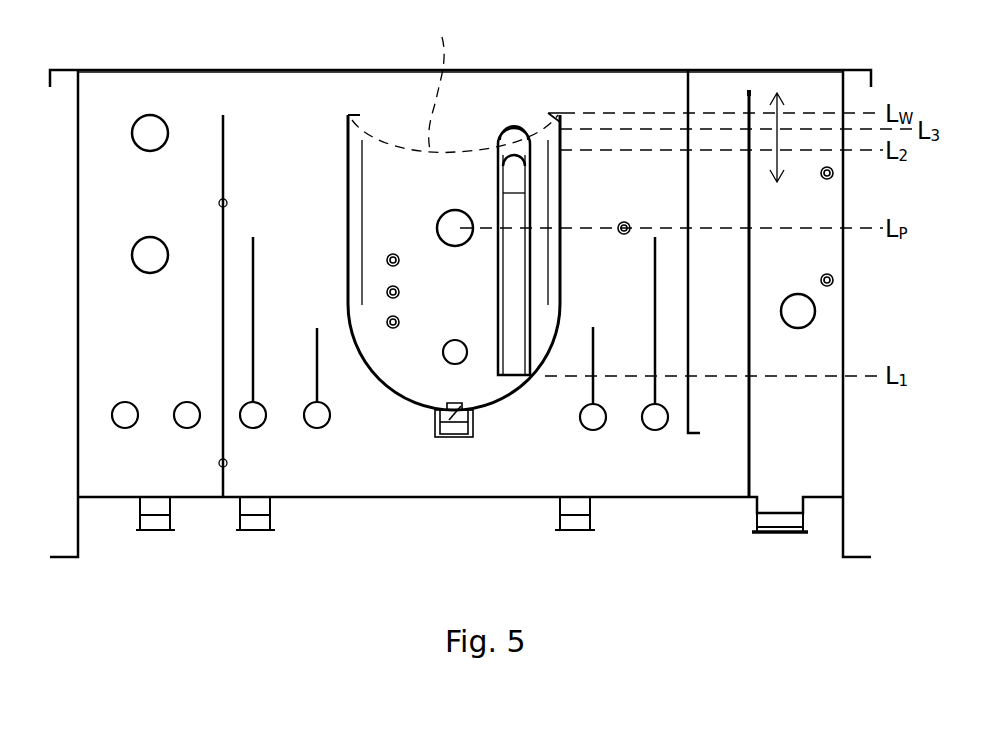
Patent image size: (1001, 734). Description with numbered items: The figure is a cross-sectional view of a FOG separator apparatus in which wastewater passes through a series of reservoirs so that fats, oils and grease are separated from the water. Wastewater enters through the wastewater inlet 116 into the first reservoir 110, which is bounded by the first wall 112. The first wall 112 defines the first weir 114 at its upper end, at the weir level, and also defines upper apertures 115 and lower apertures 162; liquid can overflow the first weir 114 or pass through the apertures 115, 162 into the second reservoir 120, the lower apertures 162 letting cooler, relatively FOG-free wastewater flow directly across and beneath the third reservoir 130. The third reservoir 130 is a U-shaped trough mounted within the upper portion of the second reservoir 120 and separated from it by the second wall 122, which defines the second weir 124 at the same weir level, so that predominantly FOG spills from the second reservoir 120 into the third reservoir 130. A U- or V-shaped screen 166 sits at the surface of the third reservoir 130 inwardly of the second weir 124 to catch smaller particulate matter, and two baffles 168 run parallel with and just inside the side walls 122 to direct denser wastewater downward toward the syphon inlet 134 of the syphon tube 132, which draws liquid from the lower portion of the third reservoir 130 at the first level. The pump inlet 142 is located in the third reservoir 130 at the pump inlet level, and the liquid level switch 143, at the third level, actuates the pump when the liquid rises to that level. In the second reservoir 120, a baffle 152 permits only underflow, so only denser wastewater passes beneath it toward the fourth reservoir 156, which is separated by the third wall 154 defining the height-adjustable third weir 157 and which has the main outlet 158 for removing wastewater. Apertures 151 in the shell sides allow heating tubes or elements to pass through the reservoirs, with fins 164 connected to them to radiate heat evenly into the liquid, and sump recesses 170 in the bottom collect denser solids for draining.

The first reservoir 110 is at (171, 363).
The first wall 112 is at (223, 157).
The first weir 114 is at (223, 113).
The apertures 115 is at (228, 204).
The wastewater inlet 116 is at (150, 137).
The second reservoir 120 is at (303, 165).
The second wall 122 is at (347, 245).
The second weir 124 is at (353, 116).
The third reservoir 130 is at (466, 190).
The syphon tube 132 is at (511, 270).
The syphon inlet 134 is at (506, 378).
The pump inlet 142 is at (436, 228).
The liquid level switch 143 is at (520, 128).
The apertures 151 is at (440, 352).
The baffle 152 is at (688, 205).
The third wall 154 is at (750, 263).
The fourth reservoir 156 is at (795, 372).
The third weir 157 is at (748, 93).
The main outlet 158 is at (815, 311).
The lower apertures 162 is at (219, 463).
The fins 164 is at (255, 237).
The screen 166 is at (442, 81).
The baffles 168 is at (362, 197).
The sump recesses 170 is at (271, 517).